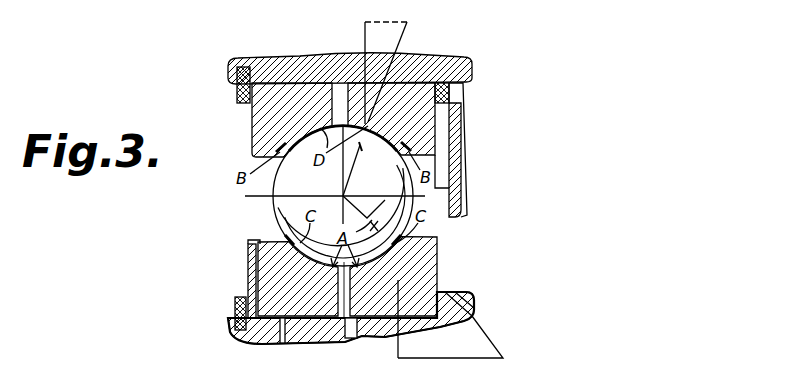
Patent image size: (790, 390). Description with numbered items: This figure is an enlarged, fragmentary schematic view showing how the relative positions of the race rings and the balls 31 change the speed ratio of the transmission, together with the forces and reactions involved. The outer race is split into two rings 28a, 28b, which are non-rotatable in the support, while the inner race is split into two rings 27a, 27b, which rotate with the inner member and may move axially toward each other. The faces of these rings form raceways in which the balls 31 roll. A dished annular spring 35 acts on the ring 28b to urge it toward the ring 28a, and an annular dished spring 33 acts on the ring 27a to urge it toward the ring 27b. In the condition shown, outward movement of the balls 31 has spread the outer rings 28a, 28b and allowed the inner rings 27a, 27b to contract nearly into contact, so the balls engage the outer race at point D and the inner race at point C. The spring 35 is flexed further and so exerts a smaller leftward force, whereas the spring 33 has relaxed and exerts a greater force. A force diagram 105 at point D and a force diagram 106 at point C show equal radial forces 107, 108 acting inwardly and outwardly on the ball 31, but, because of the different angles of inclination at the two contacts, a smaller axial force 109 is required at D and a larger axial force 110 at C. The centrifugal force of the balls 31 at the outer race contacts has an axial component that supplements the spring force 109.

The outer race ring 28a is at (263, 113).
The outer race ring 28b is at (460, 90).
The dished annular spring 35 is at (461, 143).
The balls 31 is at (290, 203).
The inner race ring 27a is at (308, 308).
The inner race ring 27b is at (430, 272).
The annular dished spring 33 is at (248, 273).
The force diagram 106 is at (452, 343).
The radial force 108 is at (398, 295).
The axial force 110 is at (418, 358).
The force diagram 105 is at (372, 32).
The radial force 107 is at (363, 43).
The axial force 109 is at (407, 22).